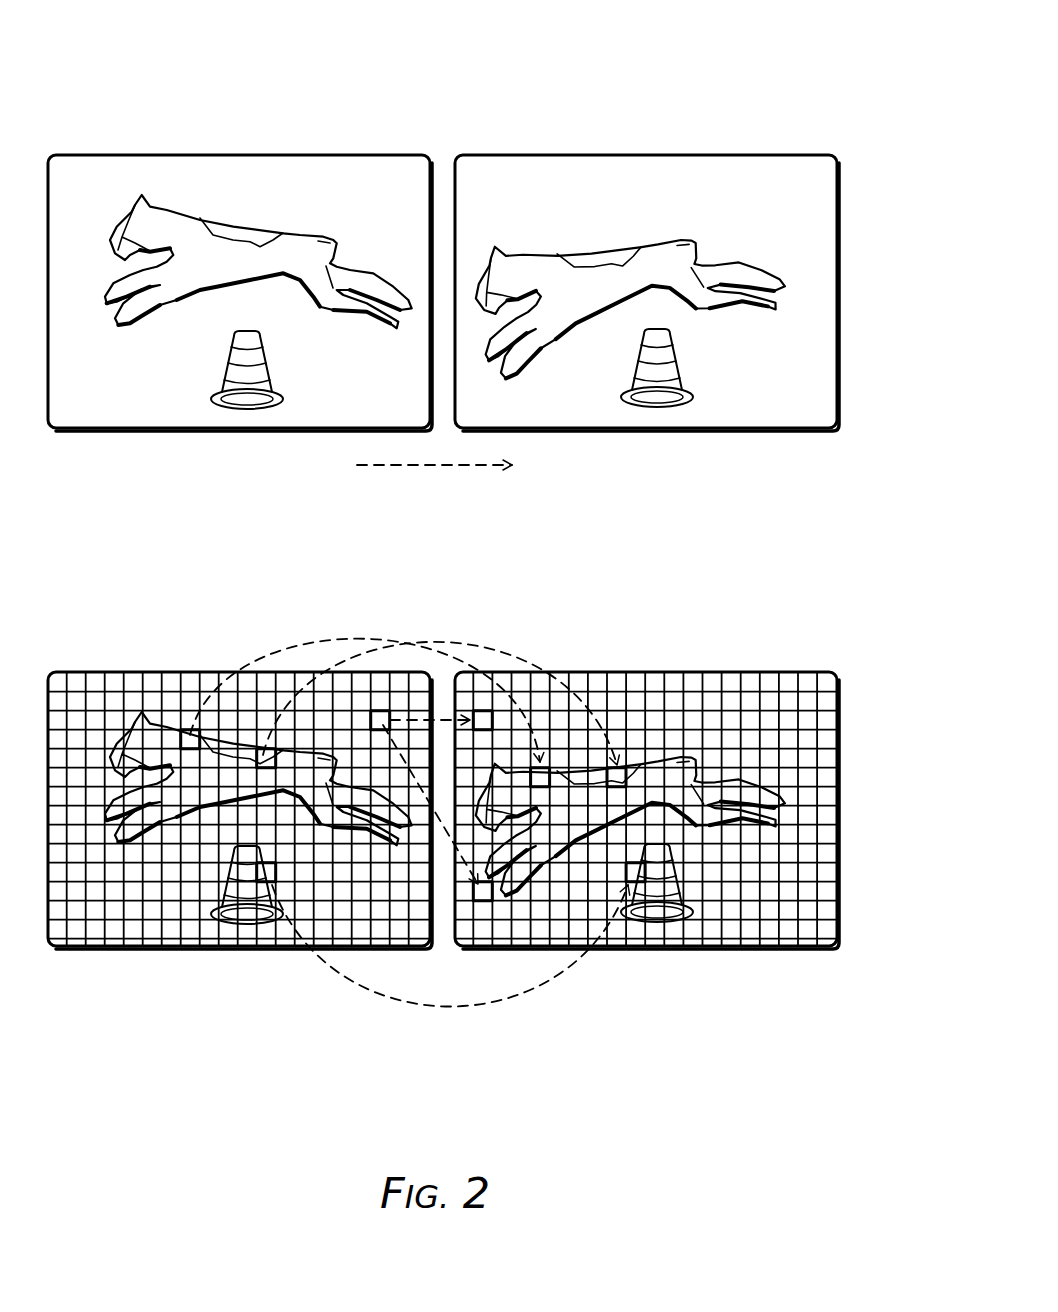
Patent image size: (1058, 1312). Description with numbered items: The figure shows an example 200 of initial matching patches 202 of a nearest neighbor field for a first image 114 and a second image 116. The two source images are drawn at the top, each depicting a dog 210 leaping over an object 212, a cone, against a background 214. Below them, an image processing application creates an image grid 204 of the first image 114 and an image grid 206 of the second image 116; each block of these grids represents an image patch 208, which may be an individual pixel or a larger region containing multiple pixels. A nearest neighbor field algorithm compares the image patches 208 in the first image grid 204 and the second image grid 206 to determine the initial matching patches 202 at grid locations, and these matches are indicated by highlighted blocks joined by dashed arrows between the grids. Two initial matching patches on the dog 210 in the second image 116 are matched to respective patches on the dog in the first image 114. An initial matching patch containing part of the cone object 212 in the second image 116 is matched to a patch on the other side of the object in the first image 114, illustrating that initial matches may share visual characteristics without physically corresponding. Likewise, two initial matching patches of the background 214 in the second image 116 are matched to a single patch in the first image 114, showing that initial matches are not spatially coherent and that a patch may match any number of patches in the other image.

The example 200 is at (647, 60).
The initial matching patches 202 is at (525, 605).
The image grid 204 is at (100, 694).
The image grid 206 is at (700, 699).
The image patches 208 is at (190, 702).
The dog 210 is at (270, 227).
The object 212 is at (275, 377).
The background 214 is at (108, 399).
The first image 114 is at (287, 470).
The second image 116 is at (710, 470).